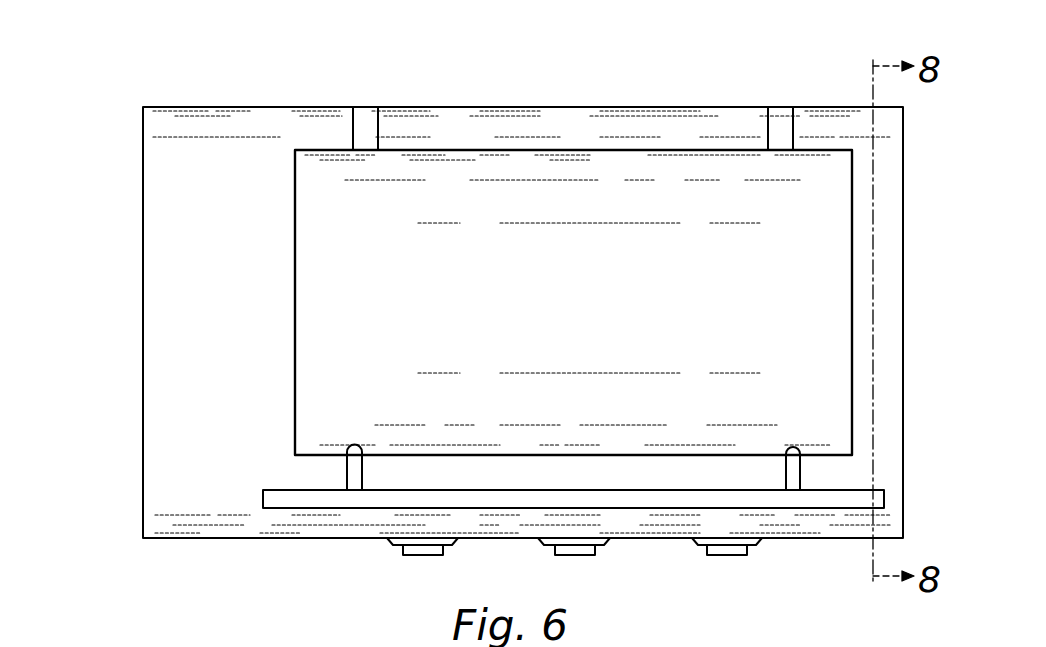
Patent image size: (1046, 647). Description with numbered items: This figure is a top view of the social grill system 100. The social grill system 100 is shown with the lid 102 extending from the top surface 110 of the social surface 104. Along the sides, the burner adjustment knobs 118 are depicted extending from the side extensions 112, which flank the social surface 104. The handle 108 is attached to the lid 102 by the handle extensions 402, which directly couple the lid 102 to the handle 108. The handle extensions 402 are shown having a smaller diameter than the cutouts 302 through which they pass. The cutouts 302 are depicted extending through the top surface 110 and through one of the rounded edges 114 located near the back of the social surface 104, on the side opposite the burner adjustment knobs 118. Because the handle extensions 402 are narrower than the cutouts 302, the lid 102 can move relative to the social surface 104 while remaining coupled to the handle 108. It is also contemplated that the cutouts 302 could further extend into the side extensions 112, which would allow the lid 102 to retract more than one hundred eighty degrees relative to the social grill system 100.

The social grill system 100 is at (136, 60).
The lid 102 is at (487, 190).
The social surface 104 is at (175, 228).
The handle 108 is at (313, 498).
The top surface 110 is at (235, 205).
The side extensions 112 is at (197, 540).
The rounded edges 114 is at (630, 106).
The burner adjustment knobs 118 is at (725, 555).
The cutouts 302 is at (760, 126).
The handle extensions 402 is at (800, 478).